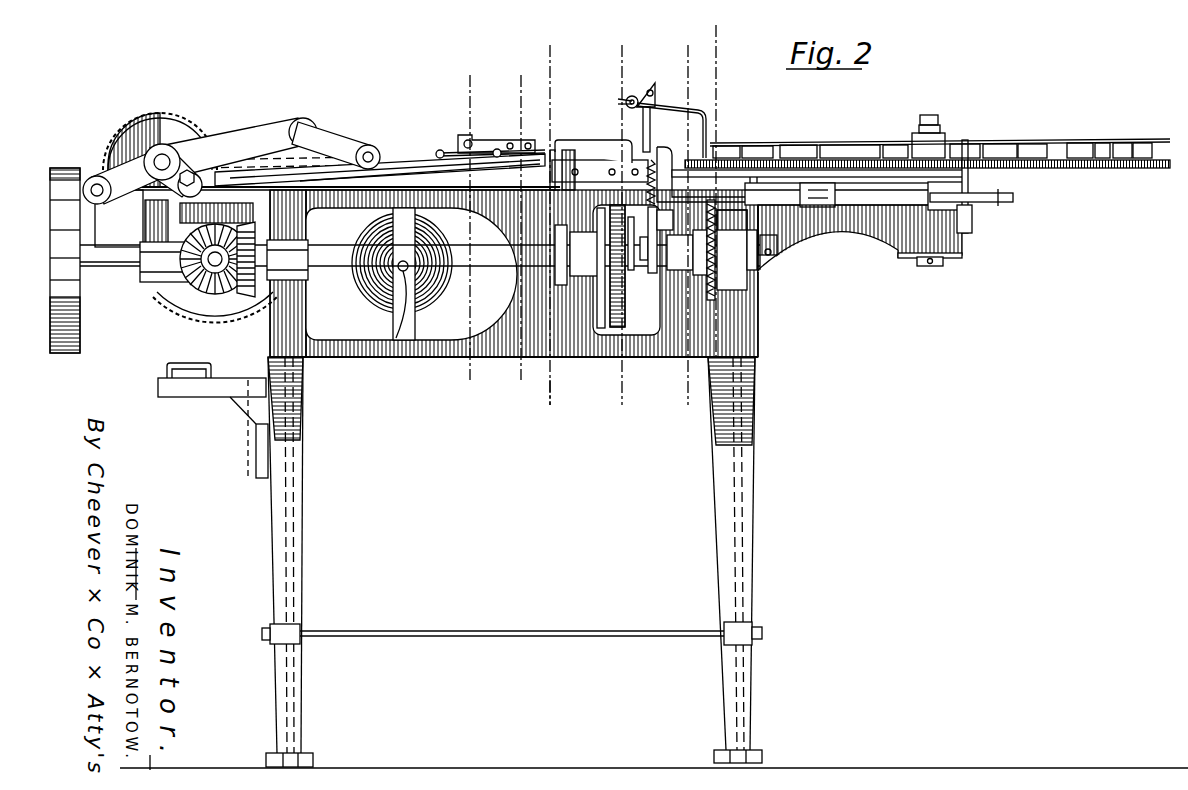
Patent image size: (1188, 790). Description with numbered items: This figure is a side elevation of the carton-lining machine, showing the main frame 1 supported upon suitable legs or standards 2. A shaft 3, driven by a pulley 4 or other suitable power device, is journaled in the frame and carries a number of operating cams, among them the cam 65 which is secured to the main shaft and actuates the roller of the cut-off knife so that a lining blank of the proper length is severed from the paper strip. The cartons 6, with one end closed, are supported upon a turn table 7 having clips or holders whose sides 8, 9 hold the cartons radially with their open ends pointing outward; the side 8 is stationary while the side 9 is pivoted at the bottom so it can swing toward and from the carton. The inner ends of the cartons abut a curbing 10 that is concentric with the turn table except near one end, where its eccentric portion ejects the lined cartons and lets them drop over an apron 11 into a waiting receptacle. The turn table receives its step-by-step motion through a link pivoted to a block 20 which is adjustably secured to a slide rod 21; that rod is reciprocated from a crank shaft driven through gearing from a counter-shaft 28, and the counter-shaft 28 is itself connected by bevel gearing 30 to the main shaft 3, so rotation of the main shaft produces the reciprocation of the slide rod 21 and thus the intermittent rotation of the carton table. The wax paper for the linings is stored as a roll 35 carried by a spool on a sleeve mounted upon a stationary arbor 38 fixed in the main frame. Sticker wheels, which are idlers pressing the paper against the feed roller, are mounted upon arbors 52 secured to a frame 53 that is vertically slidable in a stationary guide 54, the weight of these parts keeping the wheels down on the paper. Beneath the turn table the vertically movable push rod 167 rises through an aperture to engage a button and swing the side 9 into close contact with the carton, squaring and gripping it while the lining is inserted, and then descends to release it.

The main frame 1 is at (748, 326).
The legs or standards 2 is at (299, 563).
The shaft 3 is at (122, 261).
The pulley 4 is at (80, 323).
The block 20 is at (839, 232).
The slide rod 21 is at (971, 211).
The counter-shaft 28 is at (208, 290).
The bevel gearing 30 is at (232, 300).
The roll 35 is at (403, 274).
The stationary arbor 38 is at (394, 311).
The arbors 52 is at (544, 153).
The frame 53 is at (496, 131).
The stationary guide 54 is at (456, 147).
The cam 65 is at (666, 268).
The push rod 167 is at (710, 192).
The cartons 6 is at (468, 82).
The turn table 7 is at (519, 82).
The clip or holder side 8 is at (548, 398).
The clip or holder side 9 is at (620, 52).
The curbing 10 is at (686, 52).
The apron 11 is at (714, 32).